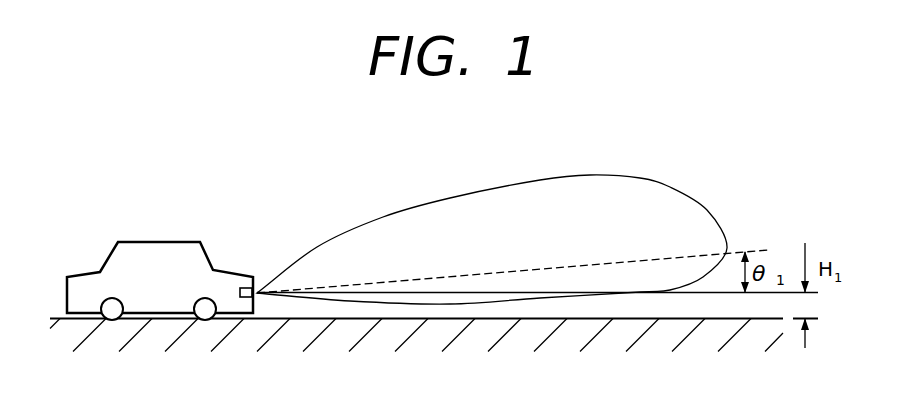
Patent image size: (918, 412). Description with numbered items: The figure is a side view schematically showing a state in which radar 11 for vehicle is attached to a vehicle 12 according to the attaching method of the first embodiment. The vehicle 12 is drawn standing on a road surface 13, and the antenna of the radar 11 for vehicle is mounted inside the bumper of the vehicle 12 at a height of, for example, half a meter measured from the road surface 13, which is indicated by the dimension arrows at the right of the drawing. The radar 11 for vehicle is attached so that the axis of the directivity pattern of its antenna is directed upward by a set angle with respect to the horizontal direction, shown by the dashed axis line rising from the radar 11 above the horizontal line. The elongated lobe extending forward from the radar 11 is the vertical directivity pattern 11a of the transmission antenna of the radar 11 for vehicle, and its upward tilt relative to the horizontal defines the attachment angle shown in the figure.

The radar for vehicle 11 is at (248, 287).
The vertical directivity pattern 11a is at (456, 198).
The vehicle 12 is at (160, 250).
The road surface 13 is at (162, 321).